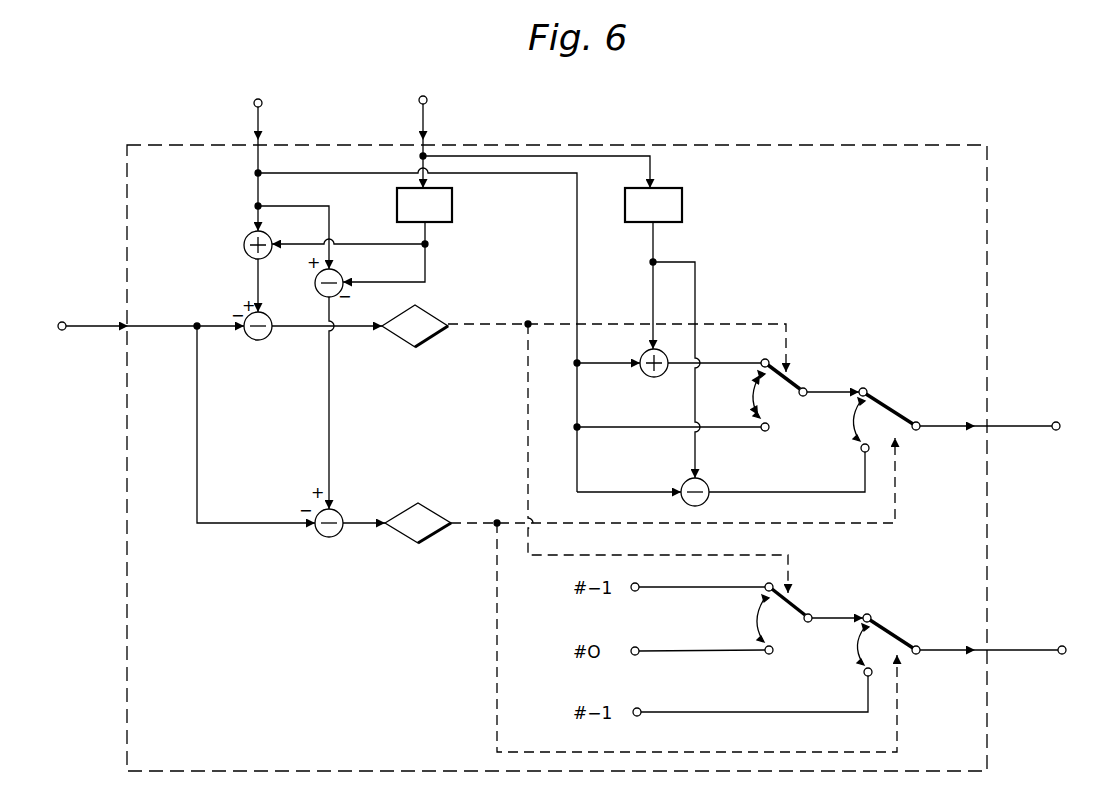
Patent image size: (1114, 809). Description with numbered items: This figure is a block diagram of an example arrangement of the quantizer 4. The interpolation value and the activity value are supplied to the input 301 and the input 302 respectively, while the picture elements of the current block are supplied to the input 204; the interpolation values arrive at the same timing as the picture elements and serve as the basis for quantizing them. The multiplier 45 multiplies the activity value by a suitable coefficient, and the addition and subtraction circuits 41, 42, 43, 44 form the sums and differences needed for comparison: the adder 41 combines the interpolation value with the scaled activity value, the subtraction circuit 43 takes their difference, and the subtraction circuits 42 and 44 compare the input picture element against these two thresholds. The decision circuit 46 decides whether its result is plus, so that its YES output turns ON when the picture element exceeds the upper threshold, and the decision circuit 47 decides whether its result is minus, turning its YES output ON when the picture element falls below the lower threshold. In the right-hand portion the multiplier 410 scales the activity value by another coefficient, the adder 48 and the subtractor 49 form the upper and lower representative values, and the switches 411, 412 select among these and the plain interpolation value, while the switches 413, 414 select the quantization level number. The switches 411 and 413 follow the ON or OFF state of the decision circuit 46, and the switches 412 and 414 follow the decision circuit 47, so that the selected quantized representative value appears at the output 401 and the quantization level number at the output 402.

The quantizer 4 is at (787, 145).
The input 301 is at (259, 121).
The input 302 is at (424, 121).
The input 204 is at (87, 325).
The addition circuit 41 is at (244, 248).
The subtraction circuit 42 is at (258, 341).
The subtraction circuit 43 is at (321, 299).
The subtraction circuit 44 is at (329, 538).
The multiplier 45 is at (453, 209).
The decision circuit 46 is at (400, 316).
The decision circuit 47 is at (435, 505).
The adder 48 is at (653, 378).
The subtractor 49 is at (684, 482).
The multiplier 410 is at (683, 207).
The switch 411 is at (798, 381).
The switch 412 is at (894, 411).
The switch 413 is at (799, 611).
The switch 414 is at (904, 644).
The output 401 is at (1010, 425).
The output 402 is at (1012, 650).